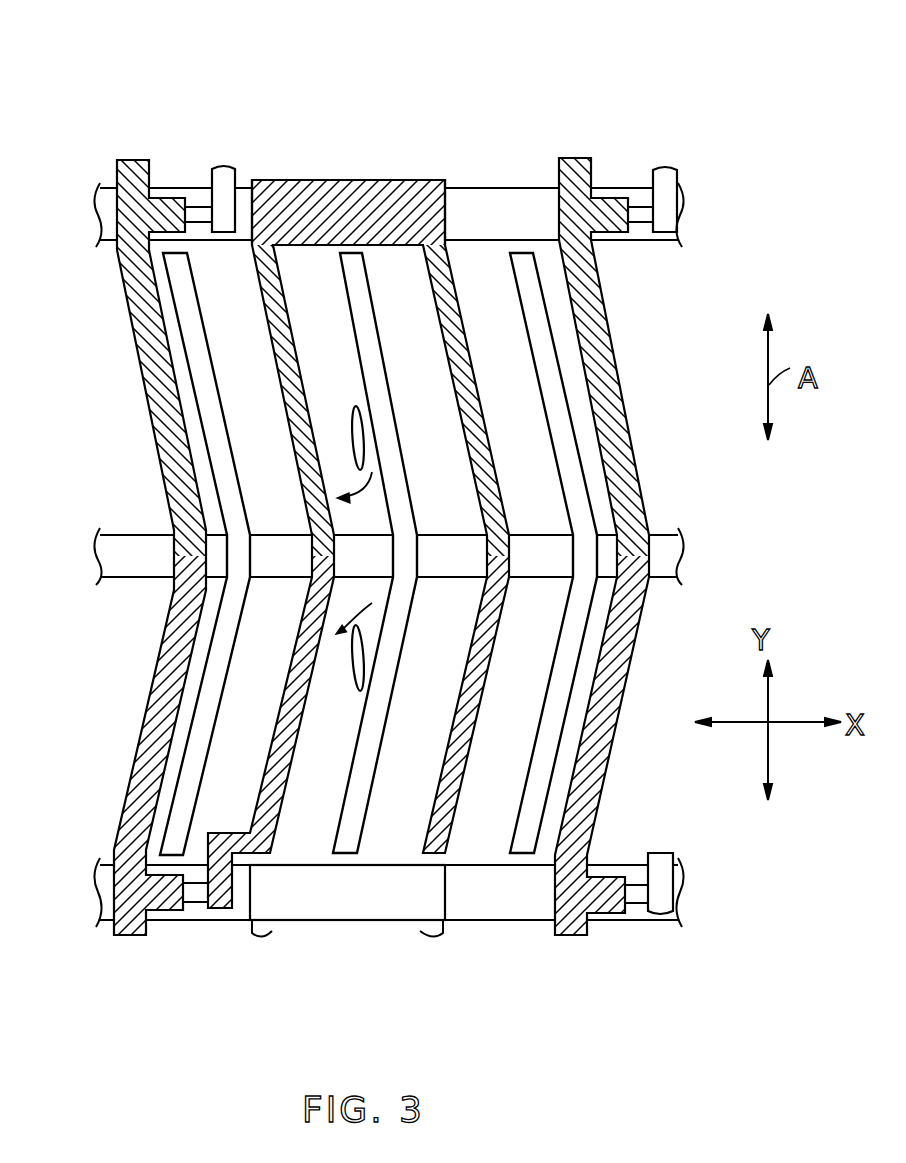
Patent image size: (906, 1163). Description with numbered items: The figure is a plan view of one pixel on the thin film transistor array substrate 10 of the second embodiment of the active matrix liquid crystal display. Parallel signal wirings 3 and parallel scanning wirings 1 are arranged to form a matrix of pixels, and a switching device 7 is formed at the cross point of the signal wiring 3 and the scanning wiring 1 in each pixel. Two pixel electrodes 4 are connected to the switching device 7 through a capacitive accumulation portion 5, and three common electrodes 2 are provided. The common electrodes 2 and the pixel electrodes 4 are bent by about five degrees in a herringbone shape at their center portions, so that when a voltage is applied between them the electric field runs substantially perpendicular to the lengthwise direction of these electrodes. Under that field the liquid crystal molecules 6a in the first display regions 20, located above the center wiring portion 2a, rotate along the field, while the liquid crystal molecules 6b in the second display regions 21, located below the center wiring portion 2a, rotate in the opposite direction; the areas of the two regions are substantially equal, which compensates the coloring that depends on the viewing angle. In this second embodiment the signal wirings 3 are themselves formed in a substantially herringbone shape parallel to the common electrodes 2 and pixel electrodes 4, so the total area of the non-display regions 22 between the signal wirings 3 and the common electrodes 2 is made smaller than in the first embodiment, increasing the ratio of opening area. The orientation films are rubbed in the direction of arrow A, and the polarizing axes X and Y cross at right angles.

The array substrate 10 is at (172, 168).
The scanning wiring 1 is at (502, 200).
The common electrode 2 is at (375, 347).
The center wiring portion 2a is at (563, 552).
The signal wiring 3 is at (130, 937).
The pixel electrode 4 is at (267, 317).
The capacitive accumulation portion 5 is at (400, 178).
The liquid crystal molecule 6a is at (350, 447).
The liquid crystal molecule 6b is at (350, 667).
The switching device 7 is at (196, 925).
The first display region 20 is at (293, 280).
The second display region 21 is at (295, 830).
The non-display region 22 is at (163, 337).